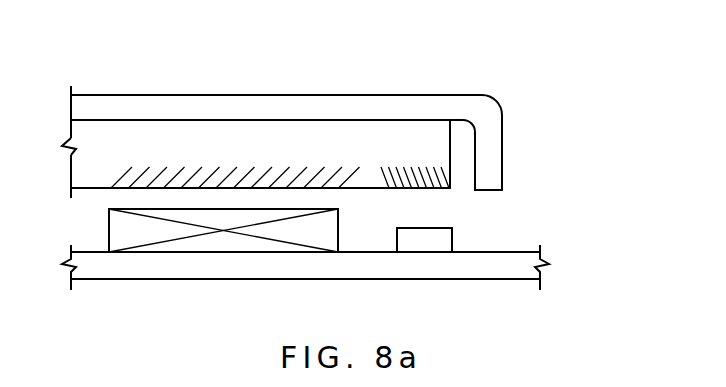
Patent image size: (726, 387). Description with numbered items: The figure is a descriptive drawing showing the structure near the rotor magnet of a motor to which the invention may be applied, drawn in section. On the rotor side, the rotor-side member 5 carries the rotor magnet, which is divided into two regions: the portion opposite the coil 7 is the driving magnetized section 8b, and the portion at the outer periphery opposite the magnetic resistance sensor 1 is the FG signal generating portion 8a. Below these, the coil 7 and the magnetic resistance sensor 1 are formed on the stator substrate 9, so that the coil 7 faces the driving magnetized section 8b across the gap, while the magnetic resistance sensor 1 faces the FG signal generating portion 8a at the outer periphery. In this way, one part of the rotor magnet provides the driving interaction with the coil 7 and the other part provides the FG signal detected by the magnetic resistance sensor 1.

The magnetic resistance sensor 1 is at (443, 243).
The cover plate / heat spreader 5 is at (263, 103).
The coil 7 is at (223, 243).
The FG signal generating portion 8a is at (417, 175).
The driving magnetized section 8b is at (198, 170).
The stator substrate 9 is at (477, 268).